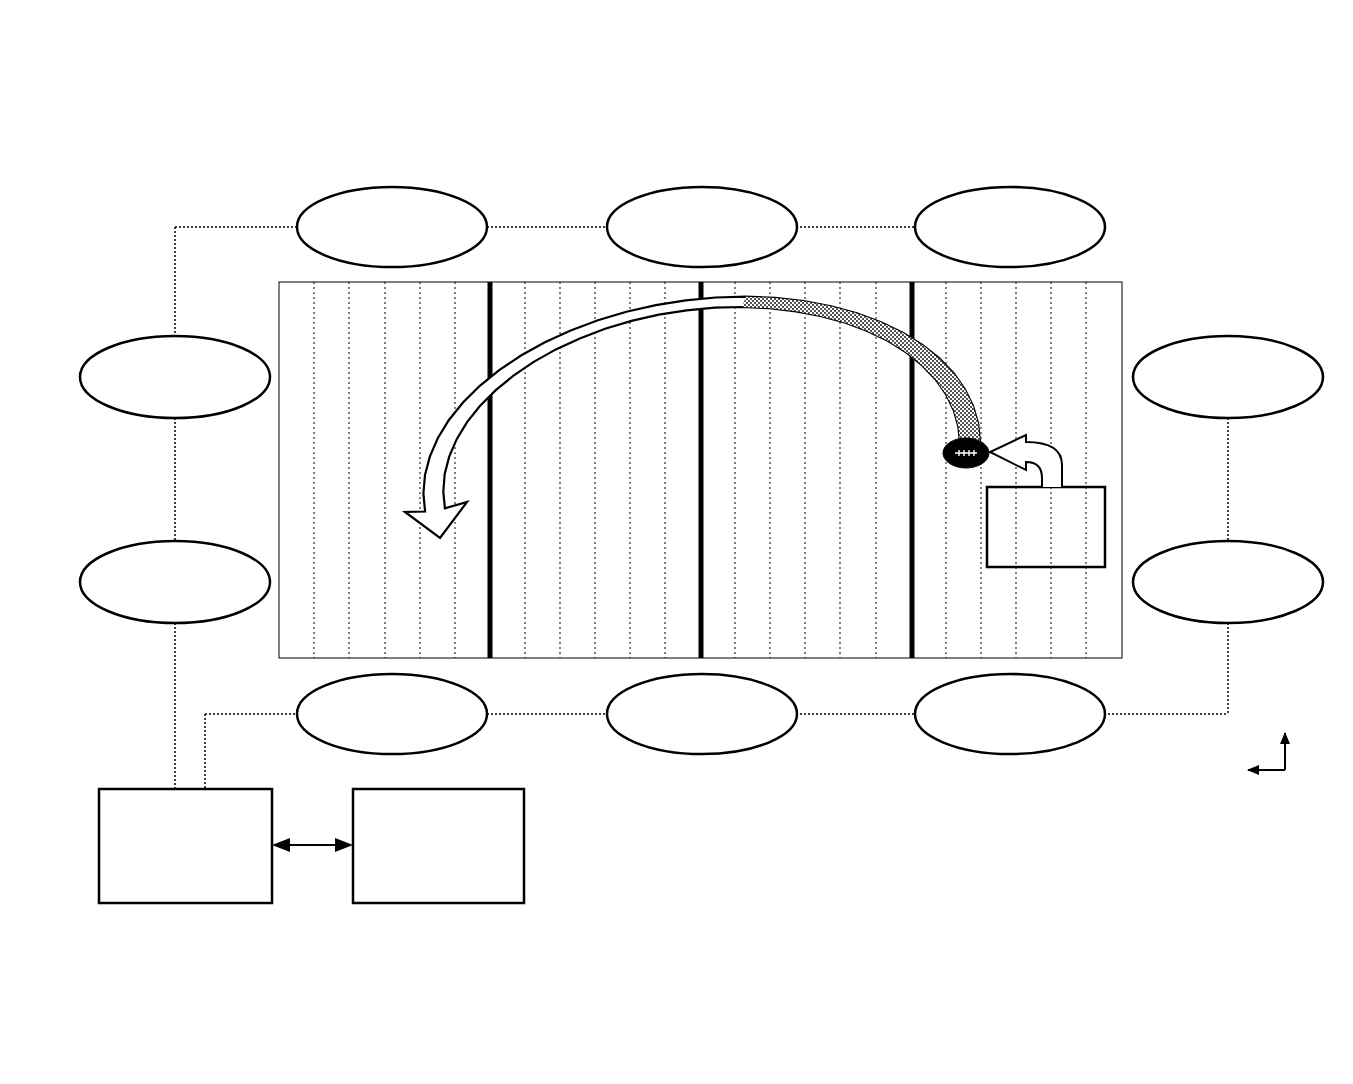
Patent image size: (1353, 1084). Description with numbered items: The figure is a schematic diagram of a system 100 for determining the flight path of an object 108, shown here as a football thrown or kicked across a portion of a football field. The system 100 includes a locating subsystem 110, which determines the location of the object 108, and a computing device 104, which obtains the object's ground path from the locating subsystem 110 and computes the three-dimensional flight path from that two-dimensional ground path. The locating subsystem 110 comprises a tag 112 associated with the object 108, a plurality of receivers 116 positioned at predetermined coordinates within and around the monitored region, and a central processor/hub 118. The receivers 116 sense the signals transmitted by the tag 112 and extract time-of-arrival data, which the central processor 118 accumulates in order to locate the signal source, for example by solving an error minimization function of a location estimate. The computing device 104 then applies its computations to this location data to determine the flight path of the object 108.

The system 100 is at (256, 126).
The locating subsystem 110 is at (1086, 172).
The receivers 116 is at (701, 488).
The object 108 is at (991, 443).
The tag 112 is at (1046, 501).
The central processor/hub 118 is at (185, 846).
The computing device 104 is at (438, 846).